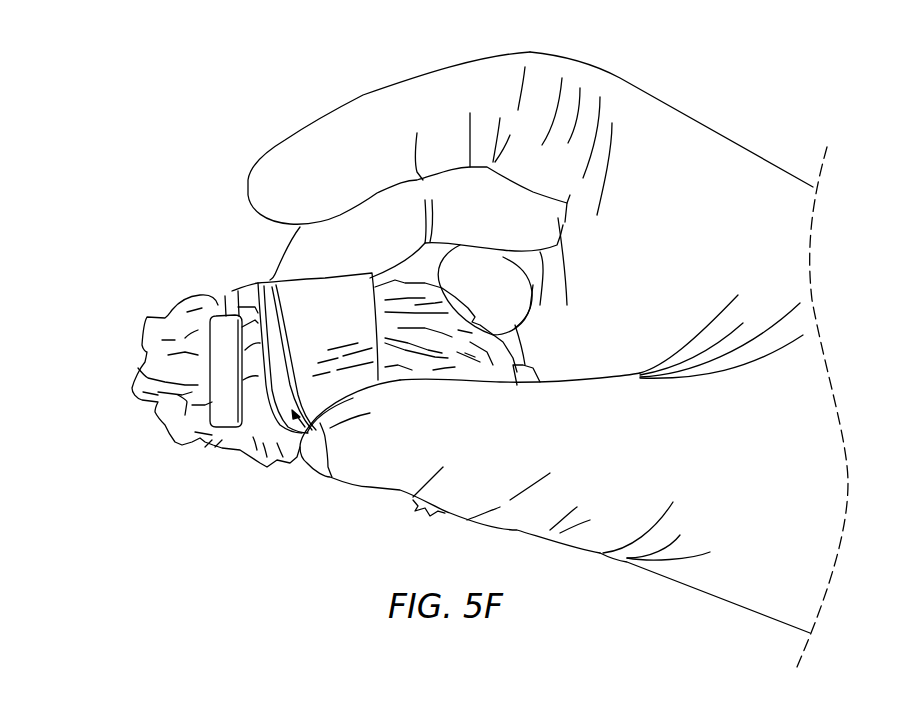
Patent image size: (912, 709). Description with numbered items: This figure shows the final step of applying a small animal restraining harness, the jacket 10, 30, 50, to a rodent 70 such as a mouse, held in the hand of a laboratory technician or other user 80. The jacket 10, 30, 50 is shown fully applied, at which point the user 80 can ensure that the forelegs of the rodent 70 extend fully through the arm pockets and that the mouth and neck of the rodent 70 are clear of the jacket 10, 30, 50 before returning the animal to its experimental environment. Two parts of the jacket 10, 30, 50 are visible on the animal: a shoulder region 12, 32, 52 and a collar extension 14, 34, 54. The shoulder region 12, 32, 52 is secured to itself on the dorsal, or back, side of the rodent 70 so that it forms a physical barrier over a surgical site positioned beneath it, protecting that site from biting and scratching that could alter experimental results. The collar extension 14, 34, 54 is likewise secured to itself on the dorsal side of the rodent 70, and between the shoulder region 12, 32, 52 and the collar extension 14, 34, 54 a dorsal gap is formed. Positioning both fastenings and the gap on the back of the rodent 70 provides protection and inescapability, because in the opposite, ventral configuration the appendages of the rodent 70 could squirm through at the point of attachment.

The jacket 10 is at (291, 375).
The jacket 30 is at (291, 375).
The jacket 50 is at (291, 375).
The shoulder region 12 is at (270, 341).
The shoulder region 32 is at (270, 341).
The shoulder region 52 is at (287, 250).
The collar extension 14 is at (142, 371).
The collar extension 34 is at (142, 371).
The collar extension 54 is at (222, 371).
The rodent 70 is at (243, 463).
The user 80 is at (609, 446).